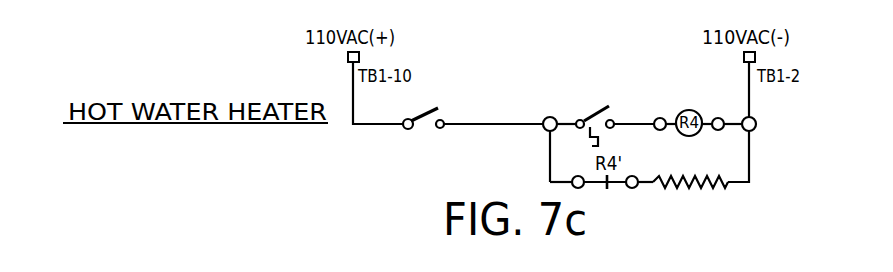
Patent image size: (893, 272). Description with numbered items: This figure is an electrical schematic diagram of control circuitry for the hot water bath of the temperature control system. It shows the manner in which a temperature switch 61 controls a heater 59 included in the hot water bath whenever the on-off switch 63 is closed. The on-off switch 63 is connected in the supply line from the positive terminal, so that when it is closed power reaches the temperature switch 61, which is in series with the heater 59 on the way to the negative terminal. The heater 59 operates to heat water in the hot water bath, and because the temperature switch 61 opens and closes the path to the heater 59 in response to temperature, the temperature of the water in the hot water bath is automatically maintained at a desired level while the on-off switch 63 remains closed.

The heater element 59 is at (684, 187).
The temperature switch 61 is at (587, 119).
The on-off switch 63 is at (426, 129).